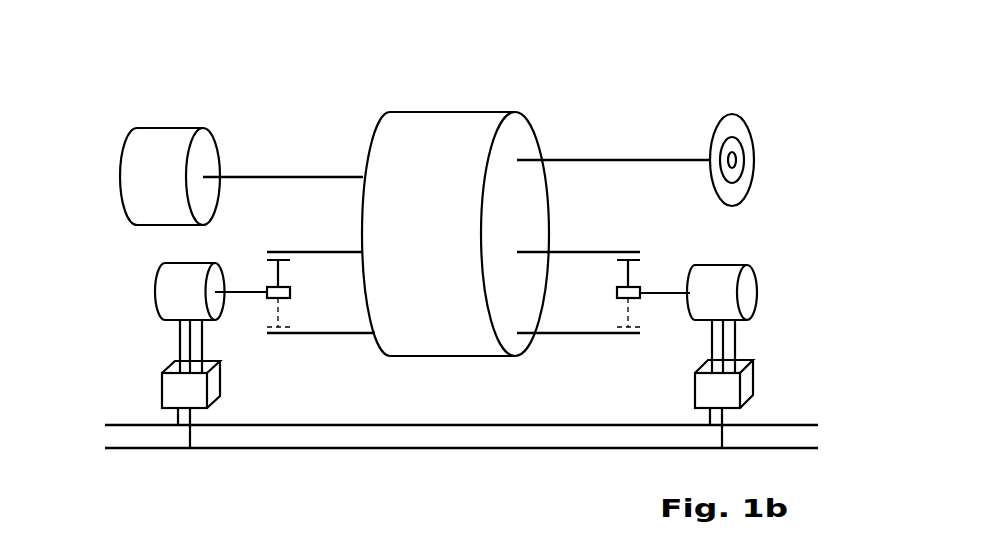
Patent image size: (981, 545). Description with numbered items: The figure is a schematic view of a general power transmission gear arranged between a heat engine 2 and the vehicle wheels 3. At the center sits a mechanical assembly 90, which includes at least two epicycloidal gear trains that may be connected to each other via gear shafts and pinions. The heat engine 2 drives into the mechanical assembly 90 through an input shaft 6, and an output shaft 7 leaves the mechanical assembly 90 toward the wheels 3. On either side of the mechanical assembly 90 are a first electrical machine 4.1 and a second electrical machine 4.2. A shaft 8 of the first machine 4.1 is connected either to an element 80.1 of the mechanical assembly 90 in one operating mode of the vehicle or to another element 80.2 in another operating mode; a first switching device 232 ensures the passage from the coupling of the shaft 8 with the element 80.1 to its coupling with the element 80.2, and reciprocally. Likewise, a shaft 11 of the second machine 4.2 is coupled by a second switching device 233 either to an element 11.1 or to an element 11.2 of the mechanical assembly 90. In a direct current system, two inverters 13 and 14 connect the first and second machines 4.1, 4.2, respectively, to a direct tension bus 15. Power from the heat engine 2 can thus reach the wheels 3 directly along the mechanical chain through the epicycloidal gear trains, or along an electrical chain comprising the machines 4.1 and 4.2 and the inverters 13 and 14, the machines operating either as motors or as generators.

The heat engine 2 is at (125, 153).
The shaft 6 is at (322, 176).
The mechanical assembly 90 is at (452, 112).
The output shaft 7 is at (648, 160).
The vehicle wheels 3 is at (750, 130).
The element of the mechanical assembly 80.1 is at (312, 252).
The element of the mechanical assembly 80.2 is at (338, 334).
The element of the mechanical assembly 11.1 is at (576, 252).
The element of the mechanical assembly 11.2 is at (575, 334).
The first switching device 232 is at (283, 278).
The second switching device 233 is at (637, 287).
The shaft of the first machine 8 is at (250, 294).
The shaft of the second machine 11 is at (672, 293).
The first electrical machine 4.1 is at (178, 264).
The second electrical machine 4.2 is at (727, 264).
The inverter 13 is at (163, 386).
The inverter 14 is at (752, 378).
The direct tension bus 15 is at (522, 449).